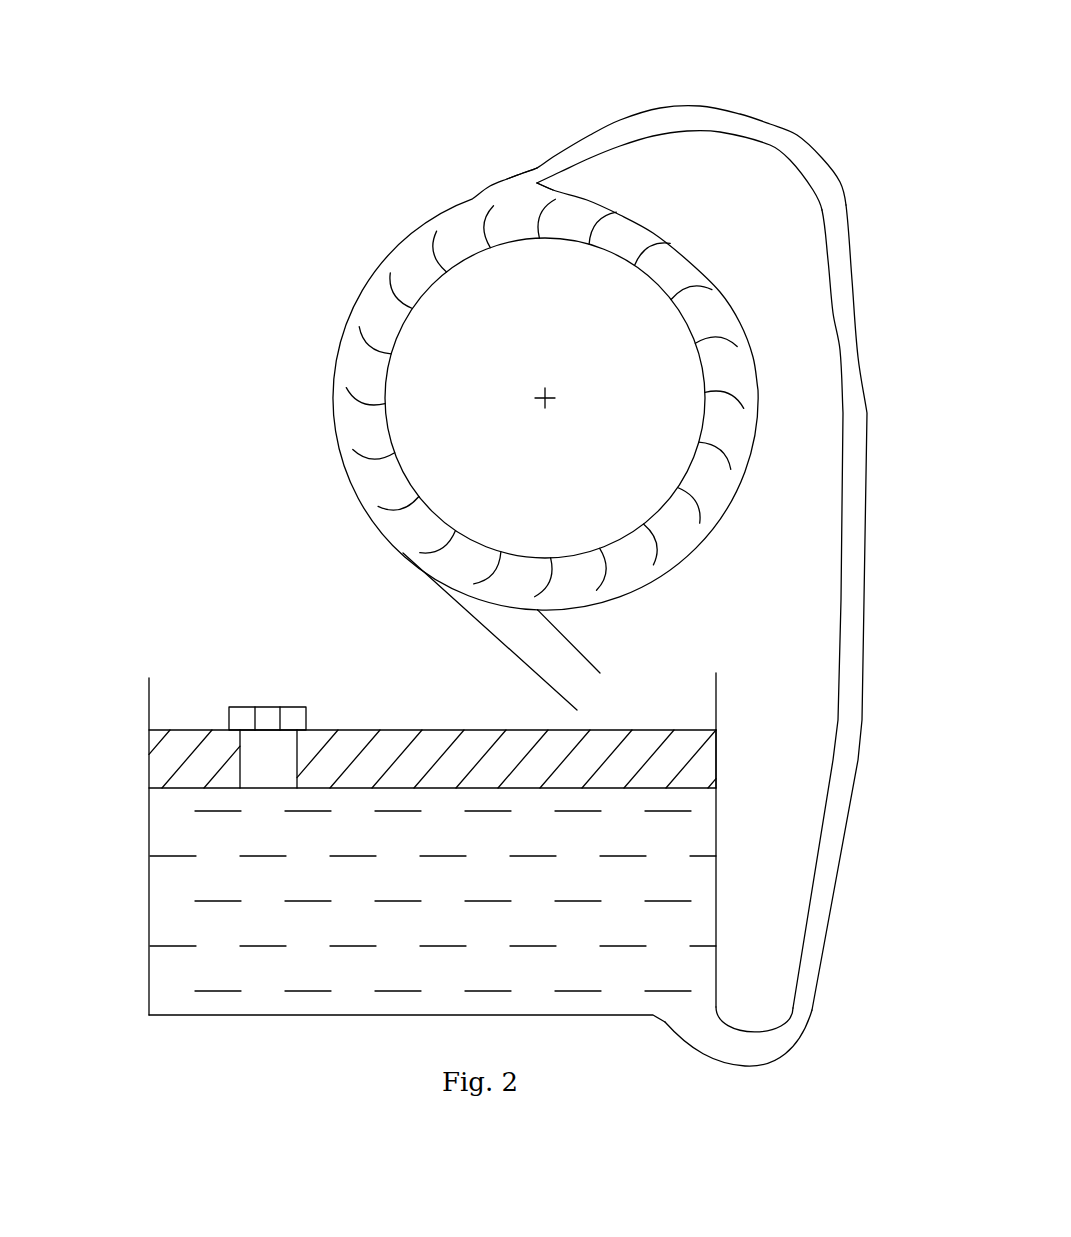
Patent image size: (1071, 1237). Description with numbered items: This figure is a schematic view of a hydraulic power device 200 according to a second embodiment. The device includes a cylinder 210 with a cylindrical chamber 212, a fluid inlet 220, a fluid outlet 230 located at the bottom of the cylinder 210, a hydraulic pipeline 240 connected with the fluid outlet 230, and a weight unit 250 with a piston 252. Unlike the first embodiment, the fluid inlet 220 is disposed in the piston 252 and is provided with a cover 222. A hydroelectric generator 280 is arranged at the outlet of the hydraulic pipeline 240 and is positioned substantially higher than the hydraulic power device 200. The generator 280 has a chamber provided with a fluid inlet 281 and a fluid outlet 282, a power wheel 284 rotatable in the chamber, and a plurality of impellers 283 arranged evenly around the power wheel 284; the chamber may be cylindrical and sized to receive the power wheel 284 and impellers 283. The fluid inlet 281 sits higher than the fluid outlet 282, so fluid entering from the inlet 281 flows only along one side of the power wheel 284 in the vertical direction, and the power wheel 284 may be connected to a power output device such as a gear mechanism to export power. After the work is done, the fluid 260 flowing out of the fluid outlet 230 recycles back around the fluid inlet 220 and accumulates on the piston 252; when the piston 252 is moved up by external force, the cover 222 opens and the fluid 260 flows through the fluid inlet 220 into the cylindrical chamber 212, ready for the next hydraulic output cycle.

The hydraulic power device 200 is at (577, 43).
The cylinder 210 is at (136, 892).
The cylindrical chamber 212 is at (270, 985).
The fluid inlet 220 is at (255, 752).
The cover 222 is at (268, 707).
The fluid outlet 230 is at (687, 1020).
The hydraulic pipeline 240 is at (840, 848).
The weight unit 250 is at (623, 728).
The piston 252 is at (717, 761).
The fluid 260 is at (242, 947).
The hydroelectric generator 280 is at (322, 357).
The fluid inlet 281 is at (525, 172).
The fluid outlet 282 is at (510, 612).
The impellers 283 is at (413, 303).
The power wheel 284 is at (472, 307).